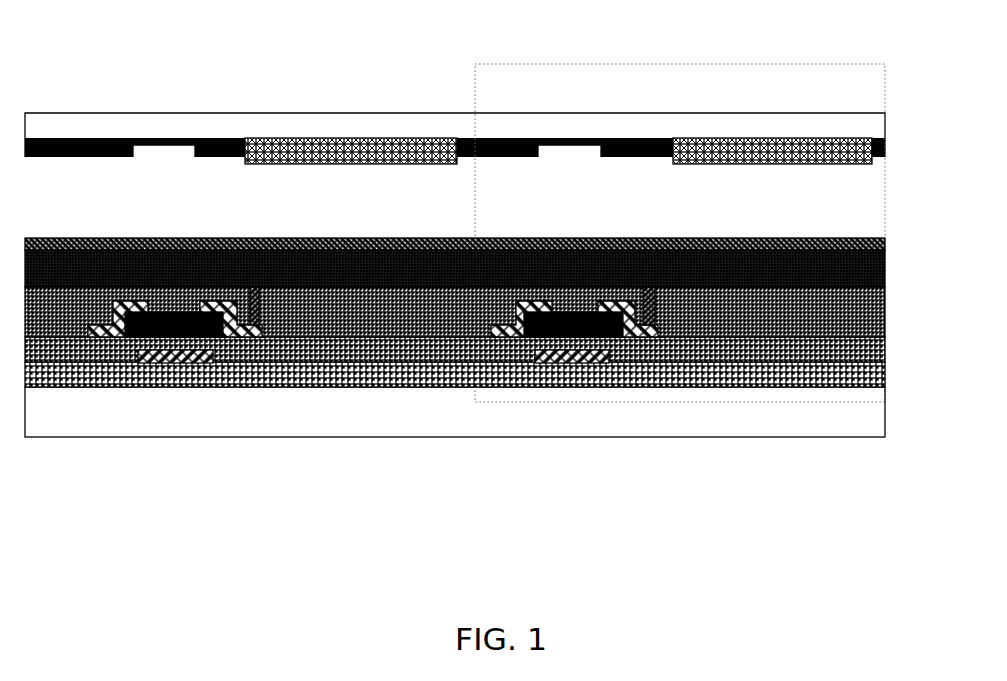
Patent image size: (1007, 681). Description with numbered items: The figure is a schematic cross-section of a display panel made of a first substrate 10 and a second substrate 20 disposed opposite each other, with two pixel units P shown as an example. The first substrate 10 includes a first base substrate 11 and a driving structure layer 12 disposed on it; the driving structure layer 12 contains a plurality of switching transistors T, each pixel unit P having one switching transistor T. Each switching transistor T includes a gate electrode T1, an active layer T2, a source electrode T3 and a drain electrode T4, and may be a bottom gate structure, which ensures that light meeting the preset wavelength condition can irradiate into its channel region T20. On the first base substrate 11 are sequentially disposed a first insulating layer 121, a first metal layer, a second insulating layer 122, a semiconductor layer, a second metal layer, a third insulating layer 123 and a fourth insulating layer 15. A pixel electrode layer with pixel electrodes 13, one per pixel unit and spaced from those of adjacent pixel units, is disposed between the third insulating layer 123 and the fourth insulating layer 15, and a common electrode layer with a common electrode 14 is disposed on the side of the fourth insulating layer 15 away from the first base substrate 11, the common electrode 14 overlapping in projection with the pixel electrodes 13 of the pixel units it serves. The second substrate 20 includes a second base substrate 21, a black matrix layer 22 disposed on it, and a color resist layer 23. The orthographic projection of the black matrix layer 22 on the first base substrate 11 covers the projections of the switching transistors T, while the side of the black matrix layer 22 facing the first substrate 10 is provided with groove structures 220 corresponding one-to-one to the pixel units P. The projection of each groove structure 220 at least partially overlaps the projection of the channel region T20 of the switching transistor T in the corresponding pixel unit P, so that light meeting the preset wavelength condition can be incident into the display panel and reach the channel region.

The first substrate 10 is at (484, 425).
The first base substrate 11 is at (455, 449).
The driving structure layer 12 is at (455, 444).
The first insulating layer 121 is at (455, 437).
The second insulating layer 122 is at (455, 424).
The third insulating layer 123 is at (455, 399).
The pixel electrode 13 is at (548, 392).
The common electrode 14 is at (455, 378).
The fourth insulating layer 15 is at (885, 238).
The switching transistor T is at (619, 423).
The gate electrode T1 is at (570, 508).
The active layer T2 is at (590, 426).
The source electrode T3 is at (547, 404).
The drain electrode T4 is at (672, 404).
The channel region T20 is at (150, 340).
The second substrate 20 is at (481, 90).
The second base substrate 21 is at (455, 86).
The black matrix layer 22 is at (455, 86).
The groove structure 220 is at (367, 86).
The color resist layer 23 is at (887, 160).
The pixel unit P is at (680, 209).